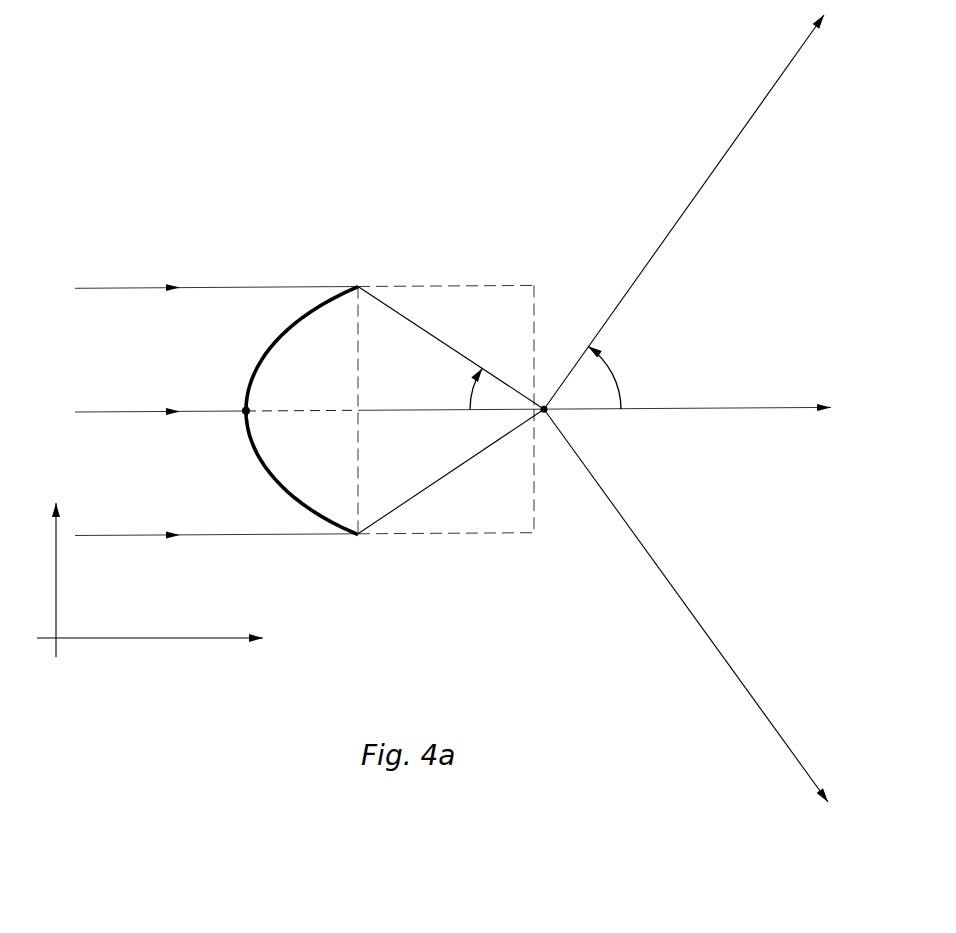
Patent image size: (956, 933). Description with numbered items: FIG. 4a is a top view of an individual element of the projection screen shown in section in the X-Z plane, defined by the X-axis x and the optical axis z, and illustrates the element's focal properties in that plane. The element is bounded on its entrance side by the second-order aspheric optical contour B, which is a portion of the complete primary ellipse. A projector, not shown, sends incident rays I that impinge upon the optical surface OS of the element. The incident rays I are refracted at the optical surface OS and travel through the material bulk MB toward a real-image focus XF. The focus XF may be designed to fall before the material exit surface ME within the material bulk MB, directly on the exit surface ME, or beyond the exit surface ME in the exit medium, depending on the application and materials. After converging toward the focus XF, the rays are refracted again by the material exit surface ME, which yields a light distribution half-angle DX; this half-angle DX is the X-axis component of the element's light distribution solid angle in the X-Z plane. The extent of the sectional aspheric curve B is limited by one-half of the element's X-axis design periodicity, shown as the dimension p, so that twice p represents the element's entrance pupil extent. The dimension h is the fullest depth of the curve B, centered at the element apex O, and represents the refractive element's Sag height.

The incident light rays I is at (211, 412).
The optical surface OS is at (304, 316).
The element apex O is at (244, 408).
The fullest depth of the curve h is at (333, 409).
The element X-axis design periodicity dimension P is at (359, 345).
The material bulk MB is at (509, 298).
The material exit surface ME is at (537, 498).
The real-image focus XF is at (545, 406).
The light distribution half-angle DX is at (614, 373).
The second-order aspheric optical contour B is at (321, 522).
The X-axis x is at (57, 592).
The optical axis Z z is at (141, 640).